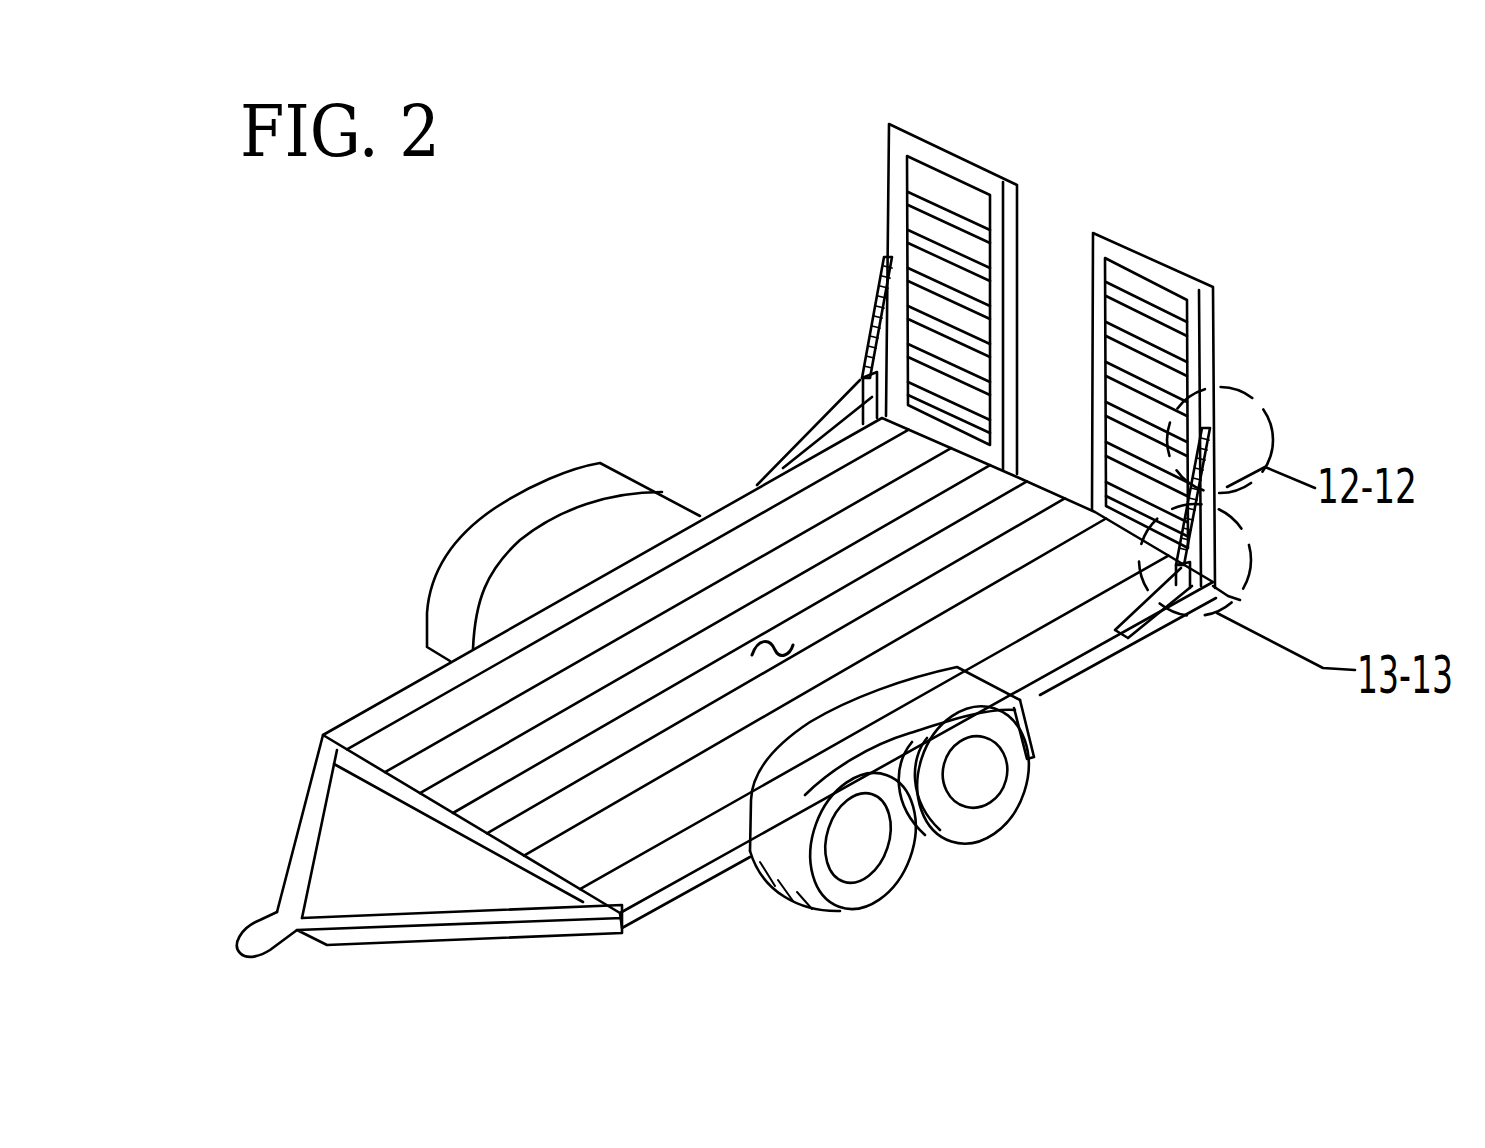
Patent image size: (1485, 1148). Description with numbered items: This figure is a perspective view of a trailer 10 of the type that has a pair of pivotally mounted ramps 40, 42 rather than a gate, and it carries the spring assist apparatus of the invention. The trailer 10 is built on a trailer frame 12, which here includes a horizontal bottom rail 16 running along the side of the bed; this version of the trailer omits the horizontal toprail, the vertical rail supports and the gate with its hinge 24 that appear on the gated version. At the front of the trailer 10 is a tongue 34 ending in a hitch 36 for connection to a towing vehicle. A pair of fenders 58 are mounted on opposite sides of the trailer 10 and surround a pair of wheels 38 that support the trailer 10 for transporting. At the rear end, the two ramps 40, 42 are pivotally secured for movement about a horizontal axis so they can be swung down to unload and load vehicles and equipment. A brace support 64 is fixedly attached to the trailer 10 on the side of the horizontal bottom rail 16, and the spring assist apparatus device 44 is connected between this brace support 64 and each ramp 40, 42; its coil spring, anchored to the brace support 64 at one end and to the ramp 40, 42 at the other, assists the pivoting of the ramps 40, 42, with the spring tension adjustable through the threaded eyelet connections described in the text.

The trailer 10 is at (658, 350).
The trailer frame 12 is at (646, 904).
The horizontal bottom rail 16 is at (1045, 680).
The hinge 24 is at (1237, 598).
The tongue 34 is at (313, 823).
The hitch 36 is at (260, 928).
The wheels 38 is at (873, 893).
The ramp 40 is at (1163, 263).
The ramp 42 is at (943, 152).
The spring assist apparatus device 44 is at (876, 325).
The fenders 58 is at (558, 495).
The brace support 64 is at (870, 397).